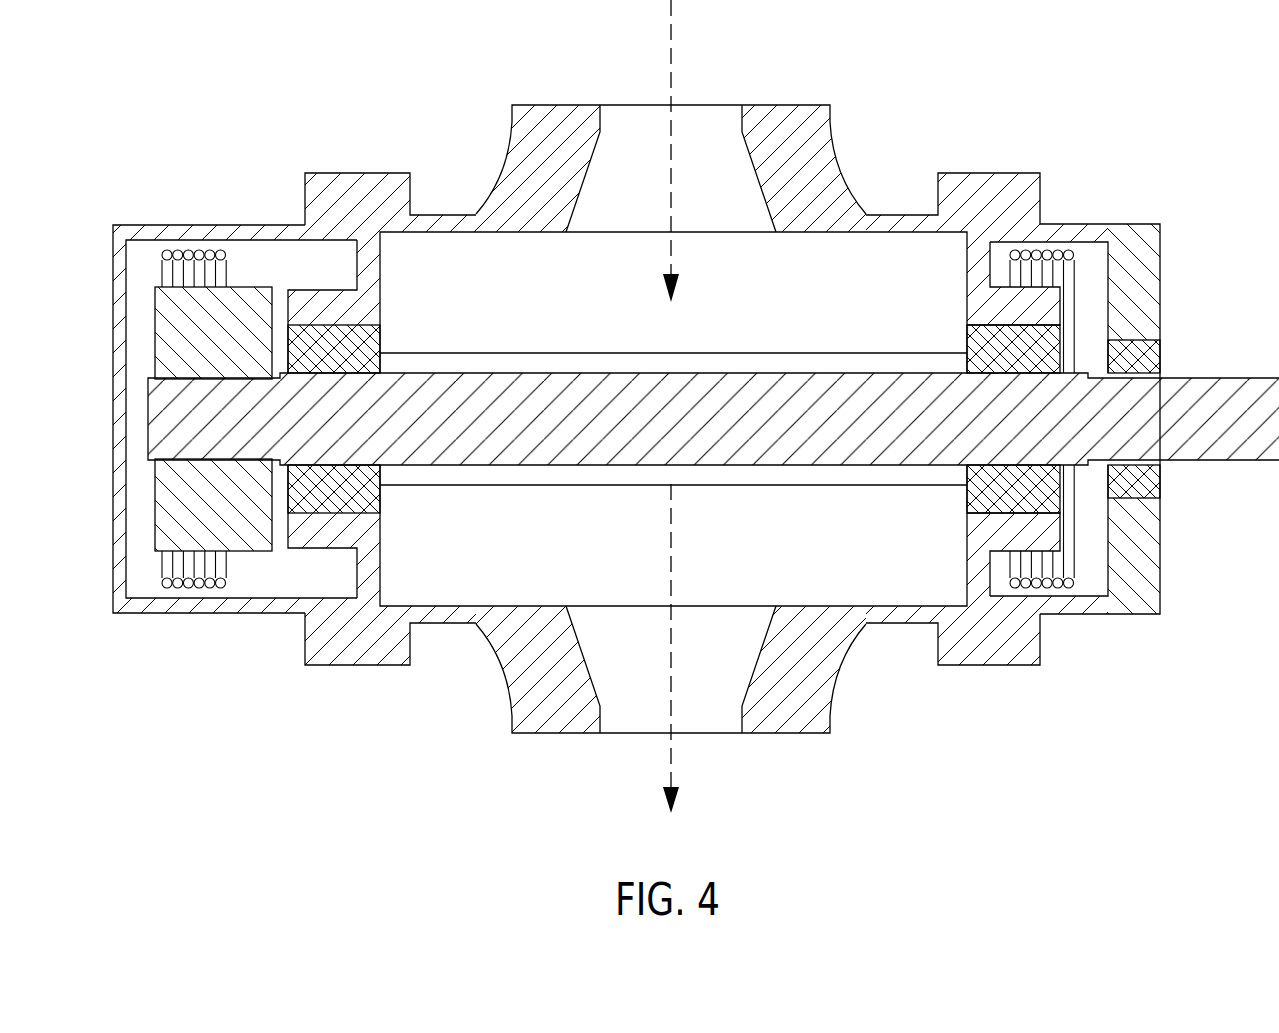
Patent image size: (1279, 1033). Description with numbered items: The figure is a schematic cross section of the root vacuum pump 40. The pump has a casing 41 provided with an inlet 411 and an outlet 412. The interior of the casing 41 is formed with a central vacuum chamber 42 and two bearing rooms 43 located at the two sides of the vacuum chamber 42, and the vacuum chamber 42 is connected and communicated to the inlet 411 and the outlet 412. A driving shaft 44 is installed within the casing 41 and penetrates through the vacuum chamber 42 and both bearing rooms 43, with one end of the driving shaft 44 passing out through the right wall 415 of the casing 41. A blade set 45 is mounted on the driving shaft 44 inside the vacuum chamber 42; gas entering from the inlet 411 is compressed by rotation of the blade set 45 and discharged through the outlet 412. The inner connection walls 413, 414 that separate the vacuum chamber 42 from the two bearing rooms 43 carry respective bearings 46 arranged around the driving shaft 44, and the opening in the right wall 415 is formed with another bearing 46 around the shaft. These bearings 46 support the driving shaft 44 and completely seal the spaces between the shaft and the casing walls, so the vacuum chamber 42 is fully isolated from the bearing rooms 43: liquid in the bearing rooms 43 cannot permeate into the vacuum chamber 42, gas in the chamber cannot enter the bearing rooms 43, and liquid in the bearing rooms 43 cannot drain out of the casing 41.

The root vacuum pump 40 is at (272, 138).
The casing 41 is at (113, 280).
The inlet 411 is at (624, 100).
The outlet 412 is at (628, 735).
The inner connection wall 413 is at (350, 329).
The inner connection wall 414 is at (968, 287).
The right wall 415 is at (1162, 263).
The vacuum chamber 42 is at (481, 282).
The bearing room 43 is at (263, 272).
The driving shaft 44 is at (858, 368).
The blade set 45 is at (873, 485).
The bearing 46 is at (348, 330).